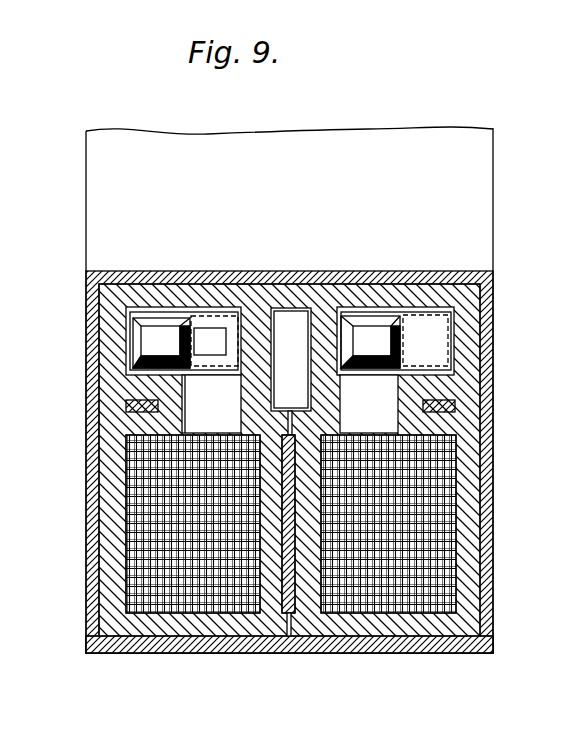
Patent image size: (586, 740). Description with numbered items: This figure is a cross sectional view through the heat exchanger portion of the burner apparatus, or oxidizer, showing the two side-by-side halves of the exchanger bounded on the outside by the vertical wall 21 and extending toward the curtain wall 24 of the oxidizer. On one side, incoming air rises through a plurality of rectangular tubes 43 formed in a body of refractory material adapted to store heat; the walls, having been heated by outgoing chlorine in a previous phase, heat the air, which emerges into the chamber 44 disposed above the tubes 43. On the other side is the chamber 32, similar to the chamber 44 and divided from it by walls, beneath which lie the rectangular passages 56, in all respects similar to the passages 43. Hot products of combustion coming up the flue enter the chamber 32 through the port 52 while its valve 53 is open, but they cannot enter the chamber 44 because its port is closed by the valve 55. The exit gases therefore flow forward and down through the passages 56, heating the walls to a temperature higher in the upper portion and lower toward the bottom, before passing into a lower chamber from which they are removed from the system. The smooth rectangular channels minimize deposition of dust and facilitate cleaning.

The vertical wall 21 is at (187, 645).
The curtain wall 24 is at (328, 270).
The chamber 32 is at (195, 388).
The tubes 43 is at (448, 523).
The chamber 44 is at (372, 380).
The port 52 is at (205, 322).
The valve 53 is at (135, 318).
The valve 55 is at (372, 308).
The rectangular passages 56 is at (112, 542).